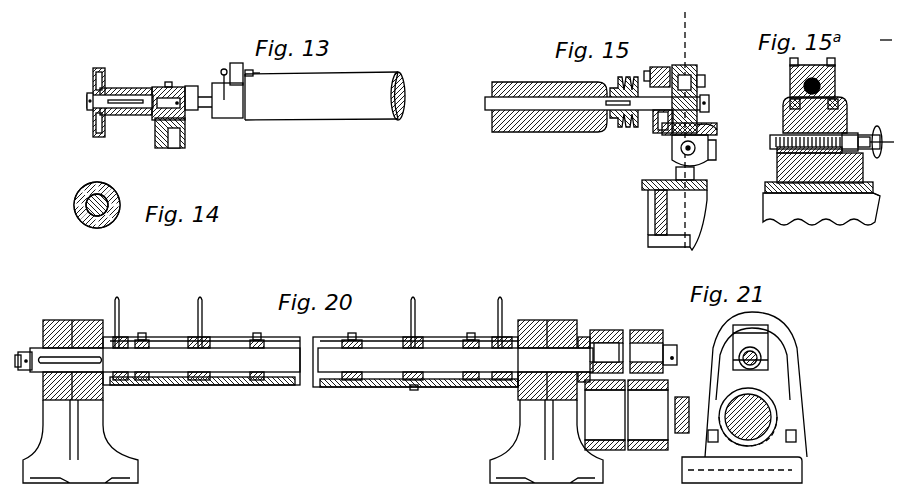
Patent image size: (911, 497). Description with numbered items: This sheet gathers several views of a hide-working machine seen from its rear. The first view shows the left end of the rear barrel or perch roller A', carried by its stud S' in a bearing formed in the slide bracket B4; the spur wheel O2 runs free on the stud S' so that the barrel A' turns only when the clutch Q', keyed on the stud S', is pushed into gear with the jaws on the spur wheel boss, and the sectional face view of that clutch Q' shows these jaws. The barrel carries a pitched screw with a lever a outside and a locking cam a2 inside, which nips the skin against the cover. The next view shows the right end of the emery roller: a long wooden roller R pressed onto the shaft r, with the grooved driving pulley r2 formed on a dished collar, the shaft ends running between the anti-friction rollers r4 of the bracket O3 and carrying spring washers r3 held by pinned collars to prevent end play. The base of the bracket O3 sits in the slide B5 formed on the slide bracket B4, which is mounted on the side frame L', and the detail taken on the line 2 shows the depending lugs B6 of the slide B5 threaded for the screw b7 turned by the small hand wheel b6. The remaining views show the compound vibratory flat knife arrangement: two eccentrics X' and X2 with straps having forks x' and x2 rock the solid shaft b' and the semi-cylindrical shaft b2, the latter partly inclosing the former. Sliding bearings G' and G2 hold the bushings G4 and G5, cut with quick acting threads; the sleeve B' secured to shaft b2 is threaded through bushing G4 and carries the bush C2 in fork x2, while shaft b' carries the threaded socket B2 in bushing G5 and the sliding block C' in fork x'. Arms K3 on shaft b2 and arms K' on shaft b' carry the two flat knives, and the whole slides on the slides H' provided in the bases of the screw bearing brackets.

In FIG. 13, the spur wheel O2 is at (106, 92).
In FIG. 13, the clutch Q' is at (155, 93).
In FIG. 14, the clutch Q' is at (99, 208).
In FIG. 13, the slide bracket B4 is at (156, 120).
In FIG. 15A, the slide bracket B4 is at (778, 165).
In FIG. 13, the stud S' is at (198, 89).
In FIG. 14, the stud S' is at (84, 211).
In FIG. 13, the lever a is at (226, 92).
In FIG. 13, the locking cam a2 is at (257, 67).
In FIG. 13, the barrel or perch roller A' is at (325, 96).
In FIG. 15, the section line 2 is at (683, 142).
In FIG. 15, the roller R is at (538, 88).
In FIG. 15, the emery roller shaft r is at (496, 106).
In FIG. 15A, the emery roller shaft r is at (826, 90).
In FIG. 15, the grooved driving pulley r2 is at (624, 111).
In FIG. 15, the spring washer r3 is at (705, 87).
In FIG. 15, the anti-friction roller bearing r4 is at (662, 67).
In FIG. 15A, the anti-friction roller bearing r4 is at (788, 100).
In FIG. 15, the slide B5 is at (674, 138).
In FIG. 15A, the slide B5 is at (780, 136).
In FIG. 15, the depending lug B6 is at (704, 146).
In FIG. 15A, the depending lug B6 is at (850, 134).
In FIG. 15A, the hand wheel b6 is at (890, 142).
In FIG. 15, the screw b7 is at (680, 160).
In FIG. 15A, the screw b7 is at (777, 148).
In FIG. 15, the bracket O3 is at (703, 127).
In FIG. 15A, the bracket O3 is at (783, 120).
In FIG. 15, the side frame L' is at (674, 215).
In FIG. 15A, the side frame L' is at (821, 203).
In FIG. 20, the socket or bushing B2 is at (33, 350).
In FIG. 20, the sliding bearing G2 is at (78, 320).
In FIG. 20, the bushing G5 is at (45, 386).
In FIG. 20, the bushing G4 is at (522, 388).
In FIG. 20, the sliding bearing G' is at (547, 325).
In FIG. 21, the sliding bearing G' is at (740, 338).
In FIG. 20, the arm K3 is at (120, 300).
In FIG. 20, the arm K' is at (313, 347).
In FIG. 20, the semi-cylindrical shaft b2 is at (445, 388).
In FIG. 20, the slide H' is at (313, 448).
In FIG. 20, the sleeve B' is at (585, 344).
In FIG. 20, the fork x2 is at (612, 330).
In FIG. 21, the fork x2 is at (795, 388).
In FIG. 20, the fork x' is at (646, 340).
In FIG. 21, the fork x' is at (746, 411).
In FIG. 20, the bush or block C2 is at (606, 353).
In FIG. 21, the bush or block C2 is at (770, 320).
In FIG. 20, the sliding block or bush C' is at (671, 345).
In FIG. 21, the sliding block or bush C' is at (715, 329).
In FIG. 20, the eccentric X2 is at (605, 415).
In FIG. 21, the eccentric X2 is at (780, 440).
In FIG. 20, the eccentric X' is at (658, 415).
In FIG. 21, the eccentric X' is at (707, 440).
In FIG. 21, the solid shaft b' is at (774, 352).